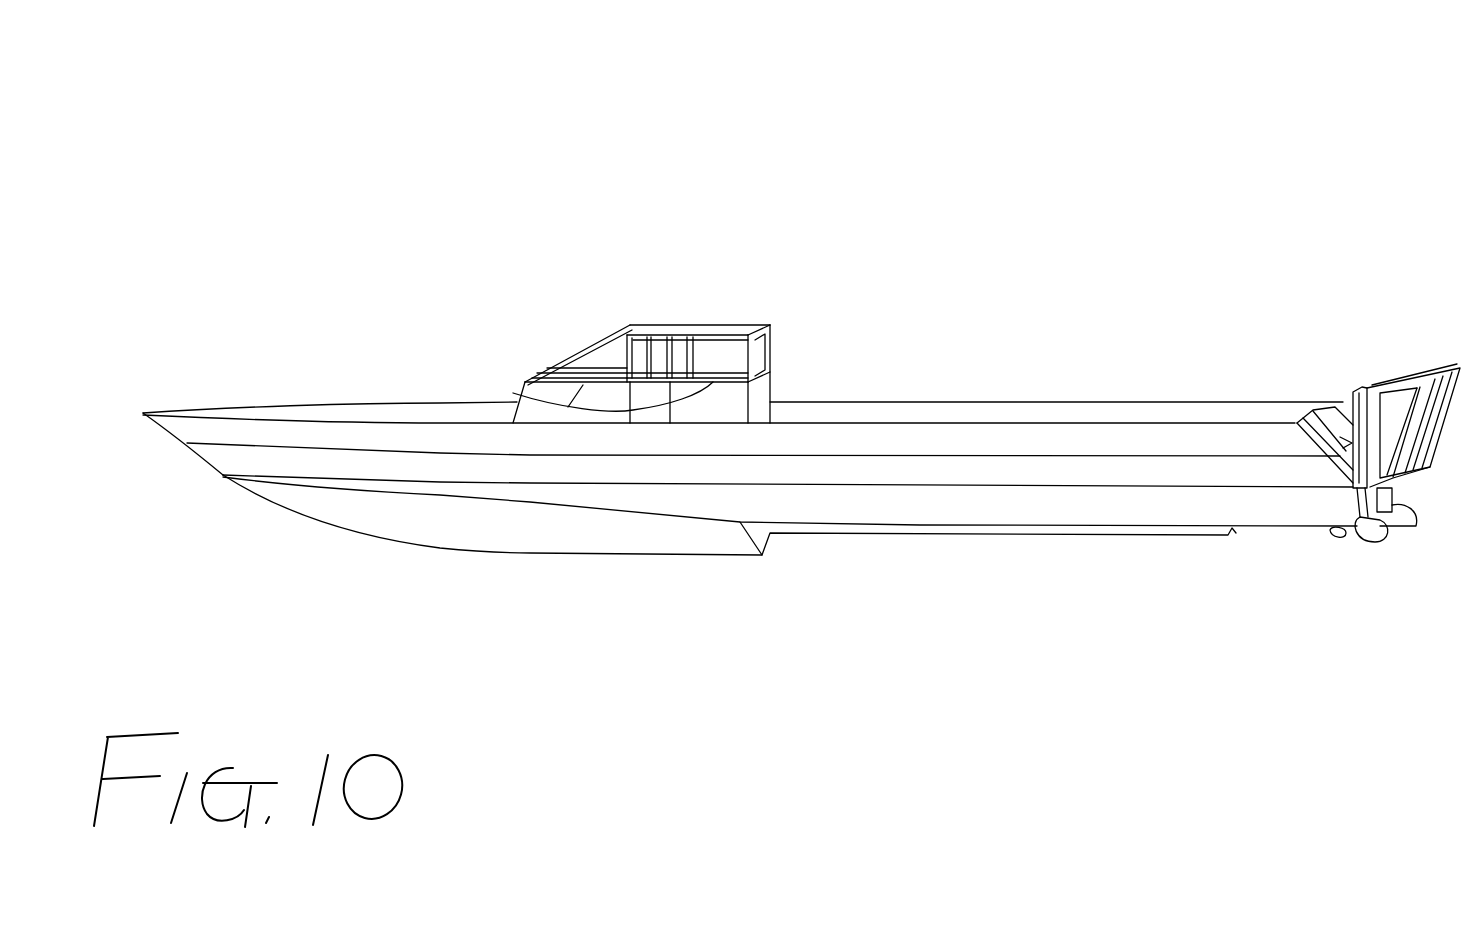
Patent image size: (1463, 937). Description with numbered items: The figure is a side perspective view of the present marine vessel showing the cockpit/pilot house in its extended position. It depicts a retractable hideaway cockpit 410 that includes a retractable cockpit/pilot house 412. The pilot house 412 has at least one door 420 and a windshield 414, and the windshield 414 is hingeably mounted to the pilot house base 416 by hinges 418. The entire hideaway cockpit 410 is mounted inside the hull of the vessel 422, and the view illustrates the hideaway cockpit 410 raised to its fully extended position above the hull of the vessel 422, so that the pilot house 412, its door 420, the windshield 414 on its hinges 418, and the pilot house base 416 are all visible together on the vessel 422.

The retractable hideaway cockpit 410 is at (887, 273).
The retractable cockpit/pilot house 412 is at (712, 327).
The windshield 414 is at (580, 343).
The pilot house base 416 is at (760, 393).
The hinges 418 is at (513, 393).
The door 420 is at (652, 327).
The vessel 422 is at (920, 498).